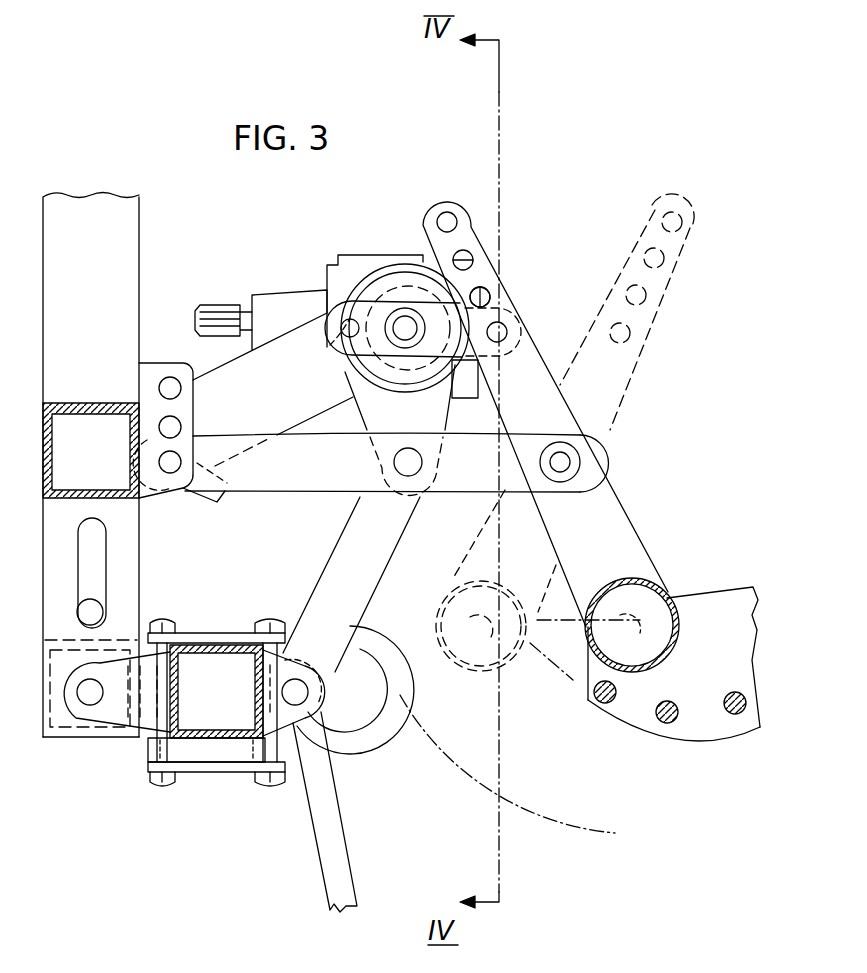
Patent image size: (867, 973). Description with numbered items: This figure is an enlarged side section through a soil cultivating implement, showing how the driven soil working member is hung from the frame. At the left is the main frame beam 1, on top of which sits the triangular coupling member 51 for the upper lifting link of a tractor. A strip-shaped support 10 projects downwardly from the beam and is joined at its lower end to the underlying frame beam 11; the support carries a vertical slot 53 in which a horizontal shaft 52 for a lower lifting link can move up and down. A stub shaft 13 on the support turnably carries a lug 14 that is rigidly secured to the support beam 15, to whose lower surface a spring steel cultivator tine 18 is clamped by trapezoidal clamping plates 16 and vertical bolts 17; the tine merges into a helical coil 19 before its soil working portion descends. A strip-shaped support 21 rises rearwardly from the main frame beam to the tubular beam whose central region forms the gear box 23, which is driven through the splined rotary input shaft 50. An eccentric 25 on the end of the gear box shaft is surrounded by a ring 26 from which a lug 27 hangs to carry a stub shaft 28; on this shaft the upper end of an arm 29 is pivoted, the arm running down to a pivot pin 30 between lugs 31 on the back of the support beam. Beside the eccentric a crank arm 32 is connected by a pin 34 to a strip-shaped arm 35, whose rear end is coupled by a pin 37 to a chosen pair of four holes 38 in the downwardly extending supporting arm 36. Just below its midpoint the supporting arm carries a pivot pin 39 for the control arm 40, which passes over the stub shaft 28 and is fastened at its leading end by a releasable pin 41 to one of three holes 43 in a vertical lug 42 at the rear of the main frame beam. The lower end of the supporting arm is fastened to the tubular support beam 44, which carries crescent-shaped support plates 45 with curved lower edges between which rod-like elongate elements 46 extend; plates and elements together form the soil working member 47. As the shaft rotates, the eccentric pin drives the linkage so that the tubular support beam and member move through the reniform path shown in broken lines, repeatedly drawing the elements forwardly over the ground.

The main frame beam 1 is at (85, 403).
The strip-shaped support 10 is at (139, 530).
The frame beam 11 is at (72, 734).
The stub shaft 13 is at (92, 705).
The lug 14 is at (148, 725).
The support beam 15 is at (210, 738).
The clamping plate 16 is at (228, 634).
The bolt 17 is at (262, 620).
The cultivator tine 18 is at (318, 872).
The helical coil 19 is at (384, 750).
The strip-shaped support 21 is at (300, 335).
The gear box 23 is at (464, 398).
The eccentric 25 is at (404, 305).
The ring 26 is at (372, 268).
The lug 27 is at (372, 418).
The stub shaft 28 is at (420, 463).
The arm 29 is at (390, 548).
The pivot pin 30 is at (305, 688).
The lug 31 is at (320, 707).
The crank arm 32 is at (337, 338).
The pin 34 is at (348, 360).
The strip-shaped arm 35 is at (495, 300).
The supporting arm 36 is at (655, 322).
The pin 37 is at (510, 332).
The hole 38 is at (457, 222).
The pivot pin 39 is at (568, 466).
The control arm 40 is at (302, 492).
The releasable pin 41 is at (222, 500).
The vertical lug 42 is at (163, 365).
The hole 43 is at (160, 395).
The tubular support beam 44 is at (650, 590).
The support plate 45 is at (718, 595).
The elongate element 46 is at (724, 700).
The soil working member 47 is at (666, 748).
The rotary input shaft 50 is at (218, 306).
The coupling member 51 is at (139, 247).
The shaft 52 is at (96, 605).
The vertical slot 53 is at (100, 568).